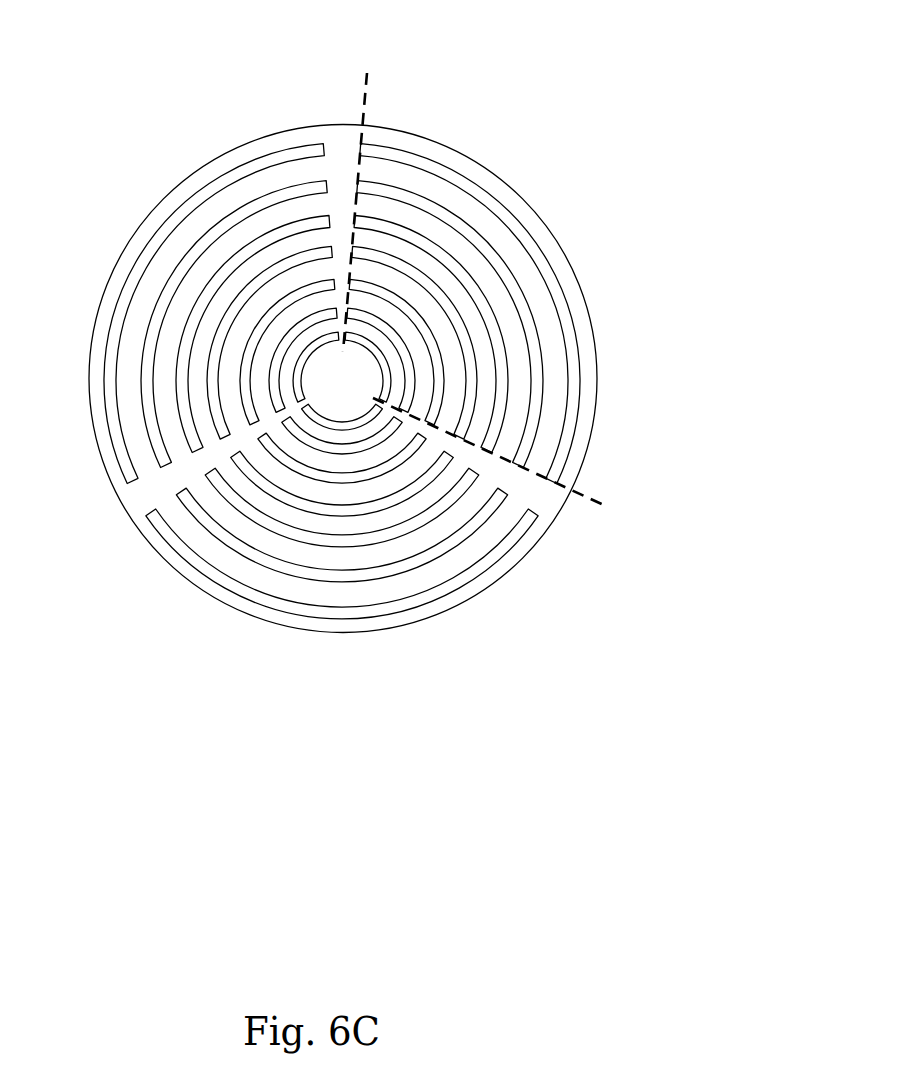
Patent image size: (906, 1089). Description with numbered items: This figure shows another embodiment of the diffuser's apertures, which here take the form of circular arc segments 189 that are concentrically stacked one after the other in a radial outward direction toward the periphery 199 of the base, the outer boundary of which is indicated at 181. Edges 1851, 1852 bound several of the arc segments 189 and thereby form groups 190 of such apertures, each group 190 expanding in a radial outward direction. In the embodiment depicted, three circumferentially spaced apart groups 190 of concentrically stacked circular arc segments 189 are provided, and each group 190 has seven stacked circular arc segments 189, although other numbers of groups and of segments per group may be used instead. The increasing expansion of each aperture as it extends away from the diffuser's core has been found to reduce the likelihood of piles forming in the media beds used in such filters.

The outer boundary of electrode plate 181 is at (467, 157).
The circular arc segments 189 is at (378, 384).
The groups 190 is at (153, 178).
The periphery 199 is at (409, 344).
The edge 1851 is at (511, 460).
The edge 1852 is at (365, 200).